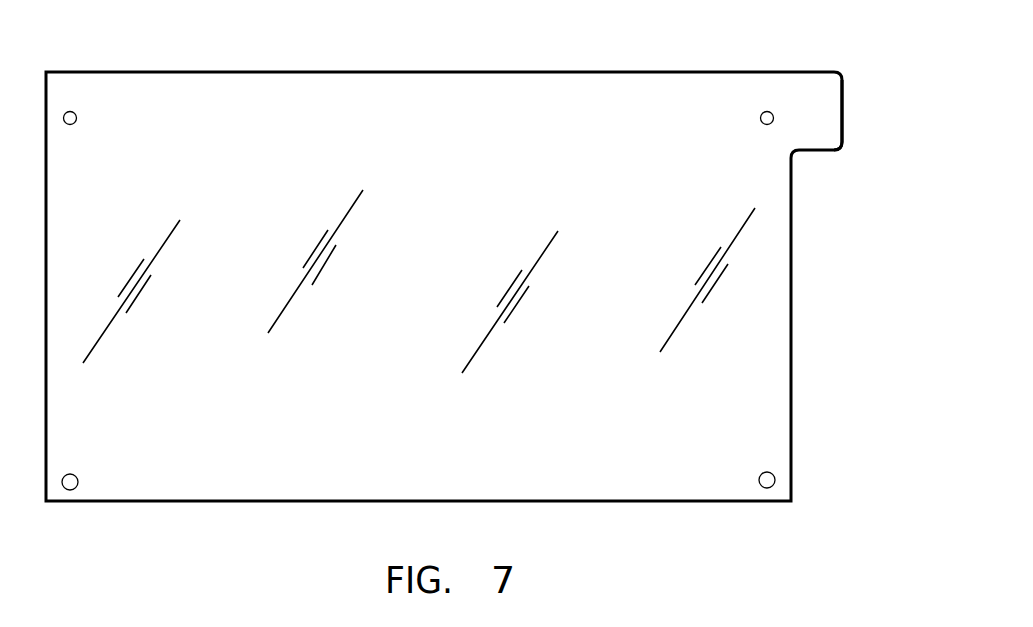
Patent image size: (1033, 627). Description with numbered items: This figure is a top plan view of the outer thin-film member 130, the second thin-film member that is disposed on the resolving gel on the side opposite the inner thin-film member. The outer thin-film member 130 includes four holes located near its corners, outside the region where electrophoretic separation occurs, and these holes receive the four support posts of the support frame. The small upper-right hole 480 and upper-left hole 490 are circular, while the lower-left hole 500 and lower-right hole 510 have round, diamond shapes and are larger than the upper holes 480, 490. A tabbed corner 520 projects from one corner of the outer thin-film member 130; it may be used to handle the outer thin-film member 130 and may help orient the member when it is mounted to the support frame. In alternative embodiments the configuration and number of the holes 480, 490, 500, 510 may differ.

The outer thin-film member 130 is at (605, 72).
The upper-right hole 480 is at (762, 123).
The upper-left hole 490 is at (76, 122).
The lower-left hole 500 is at (77, 476).
The lower-right hole 510 is at (760, 474).
The tabbed corner 520 is at (843, 100).